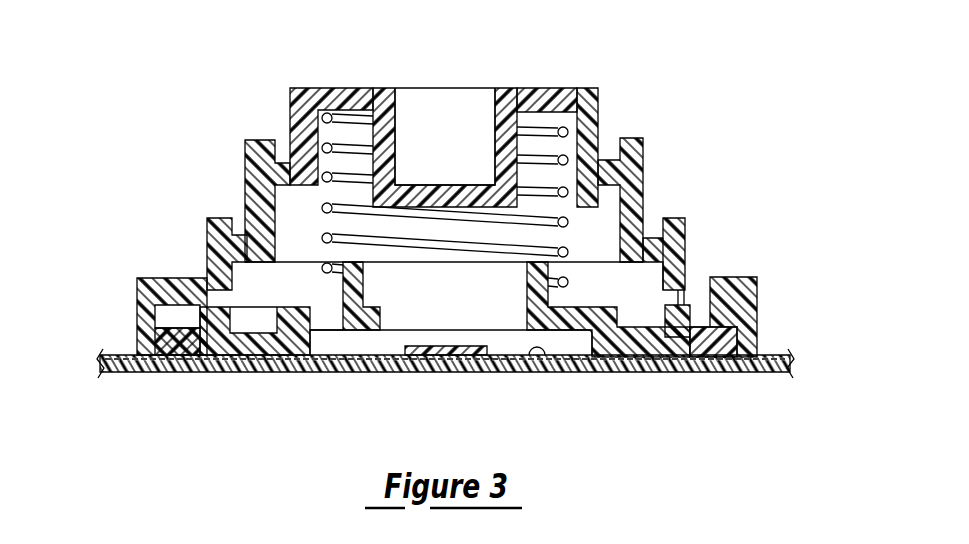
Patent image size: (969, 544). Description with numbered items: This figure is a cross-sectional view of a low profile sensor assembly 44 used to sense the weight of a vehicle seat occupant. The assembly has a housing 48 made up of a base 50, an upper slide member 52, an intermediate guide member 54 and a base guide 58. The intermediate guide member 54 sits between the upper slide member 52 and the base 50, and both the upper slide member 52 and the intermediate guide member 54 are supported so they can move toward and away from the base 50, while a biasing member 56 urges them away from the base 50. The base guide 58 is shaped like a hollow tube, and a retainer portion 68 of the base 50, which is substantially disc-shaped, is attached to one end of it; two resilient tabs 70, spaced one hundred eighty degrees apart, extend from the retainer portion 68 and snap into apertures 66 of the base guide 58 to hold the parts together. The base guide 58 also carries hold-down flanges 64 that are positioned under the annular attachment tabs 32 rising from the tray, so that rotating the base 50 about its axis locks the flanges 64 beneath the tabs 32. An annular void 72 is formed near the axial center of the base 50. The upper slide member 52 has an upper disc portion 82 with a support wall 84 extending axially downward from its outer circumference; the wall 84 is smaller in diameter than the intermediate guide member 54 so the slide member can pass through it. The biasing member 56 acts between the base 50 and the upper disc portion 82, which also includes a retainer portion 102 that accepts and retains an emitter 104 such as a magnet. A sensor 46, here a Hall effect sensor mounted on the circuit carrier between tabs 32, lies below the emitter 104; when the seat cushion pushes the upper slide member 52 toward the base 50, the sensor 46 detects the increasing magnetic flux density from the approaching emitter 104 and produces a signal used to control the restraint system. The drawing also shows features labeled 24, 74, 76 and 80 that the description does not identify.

The circuit board 24 is at (540, 355).
The annular attachment tabs 32 is at (740, 294).
The low profile sensor assembly 44 is at (692, 131).
The sensor 46 is at (440, 352).
The housing 48 is at (694, 218).
The base 50 is at (680, 272).
The upper slide member 52 is at (590, 118).
The intermediate guide member 54 is at (645, 170).
The biasing member 56 is at (320, 210).
The base guide 58 is at (205, 254).
The hold-down flanges 64 is at (160, 345).
The apertures 66 is at (213, 300).
The retainer portion 68 is at (634, 357).
The resilient tabs 70 is at (712, 325).
The annular void 72 is at (337, 352).
The cavity 74 is at (293, 302).
The groove 76 is at (248, 334).
The cup member 80 is at (370, 280).
The upper disc portion 82 is at (541, 92).
The support wall 84 is at (300, 118).
The retainer portion 102 is at (394, 92).
The emitter 104 is at (441, 97).